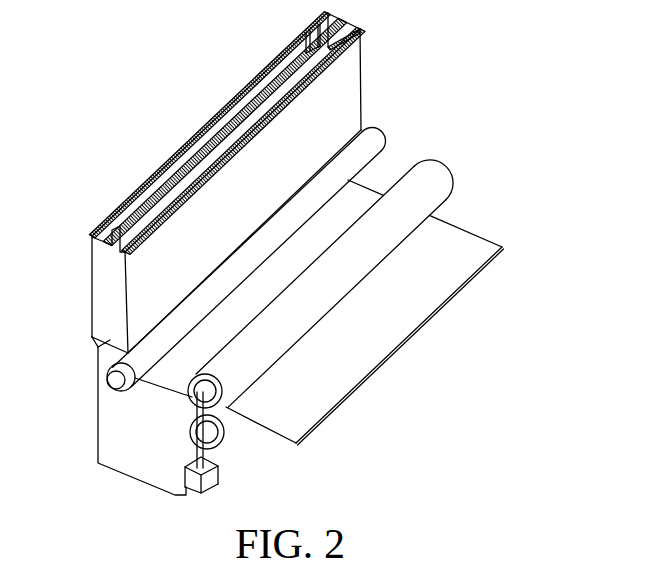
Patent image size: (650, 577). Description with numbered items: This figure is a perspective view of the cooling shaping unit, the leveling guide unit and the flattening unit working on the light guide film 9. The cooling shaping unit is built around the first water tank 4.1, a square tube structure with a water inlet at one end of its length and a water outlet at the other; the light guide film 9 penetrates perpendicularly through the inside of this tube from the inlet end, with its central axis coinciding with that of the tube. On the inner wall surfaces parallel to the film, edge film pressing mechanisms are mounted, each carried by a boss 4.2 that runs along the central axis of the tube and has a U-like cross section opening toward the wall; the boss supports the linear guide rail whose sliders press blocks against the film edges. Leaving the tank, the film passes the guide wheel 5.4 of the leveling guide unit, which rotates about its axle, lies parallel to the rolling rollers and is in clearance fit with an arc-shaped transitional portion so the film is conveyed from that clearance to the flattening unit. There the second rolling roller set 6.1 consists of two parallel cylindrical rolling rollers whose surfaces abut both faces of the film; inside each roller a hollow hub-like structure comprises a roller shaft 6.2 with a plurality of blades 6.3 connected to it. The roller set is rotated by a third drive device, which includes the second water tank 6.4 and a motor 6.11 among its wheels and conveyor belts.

The light guide film 9 is at (252, 107).
The first water tank 4.1 is at (353, 52).
The boss 4.2 is at (118, 213).
The guide wheel 5.4 is at (362, 148).
The second rolling roller set 6.1 is at (426, 194).
The roller shaft 6.2 is at (224, 392).
The blades 6.3 is at (225, 433).
The second water tank 6.4 is at (220, 476).
The motor 6.11 is at (195, 447).